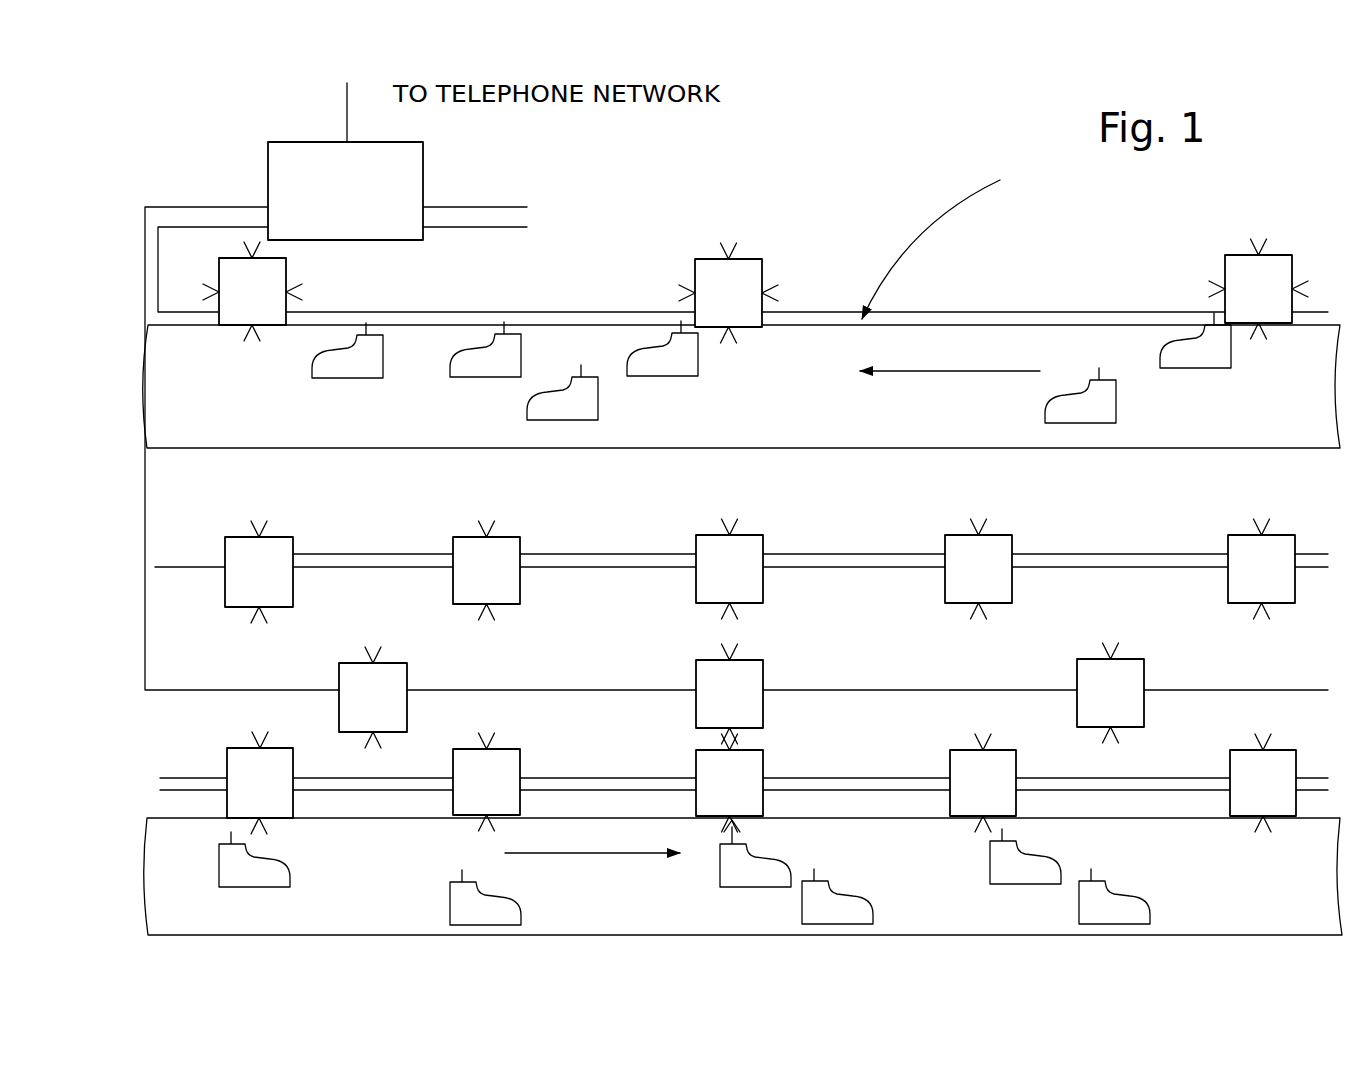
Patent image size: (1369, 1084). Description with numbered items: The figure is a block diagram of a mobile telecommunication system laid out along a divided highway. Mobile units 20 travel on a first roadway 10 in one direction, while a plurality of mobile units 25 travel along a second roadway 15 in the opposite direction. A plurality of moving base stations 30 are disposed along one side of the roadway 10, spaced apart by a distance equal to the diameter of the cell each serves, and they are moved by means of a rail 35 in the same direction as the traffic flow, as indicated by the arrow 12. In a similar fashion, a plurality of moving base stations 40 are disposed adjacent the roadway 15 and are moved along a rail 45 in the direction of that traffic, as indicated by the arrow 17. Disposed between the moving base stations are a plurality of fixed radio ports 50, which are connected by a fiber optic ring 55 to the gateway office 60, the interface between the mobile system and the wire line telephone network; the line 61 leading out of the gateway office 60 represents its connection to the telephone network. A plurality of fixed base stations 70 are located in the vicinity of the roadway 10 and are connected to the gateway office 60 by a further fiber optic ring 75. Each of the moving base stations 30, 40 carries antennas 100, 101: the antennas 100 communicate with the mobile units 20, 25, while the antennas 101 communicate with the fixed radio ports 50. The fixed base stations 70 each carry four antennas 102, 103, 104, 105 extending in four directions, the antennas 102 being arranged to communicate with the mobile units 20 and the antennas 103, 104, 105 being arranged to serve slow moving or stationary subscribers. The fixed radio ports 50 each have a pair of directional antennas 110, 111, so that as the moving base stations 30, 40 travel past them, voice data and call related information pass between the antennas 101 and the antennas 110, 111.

The first roadway 10 is at (943, 236).
The arrow 12 is at (952, 360).
The second roadway 15 is at (198, 876).
The arrow 17 is at (597, 855).
The mobile units 20 is at (368, 365).
The mobile units 25 is at (238, 888).
The moving base stations 30 is at (293, 593).
The rail 35 is at (388, 560).
The moving base stations 40 is at (293, 750).
The rail 45 is at (398, 780).
The fixed radio ports 50 is at (407, 680).
The fiber optic ring 55 is at (478, 207).
The gateway office 60 is at (423, 178).
The telephone network line 61 is at (347, 117).
The fixed base stations 70 is at (758, 275).
The fiber optic ring 75 is at (213, 227).
The antennas 100 is at (269, 677).
The antennas 101 is at (263, 677).
The antennas 102 is at (256, 346).
The antennas 103 is at (191, 292).
The antennas 104 is at (230, 244).
The antennas 105 is at (316, 292).
The directional antennas 110 is at (378, 644).
The directional antennas 111 is at (380, 752).